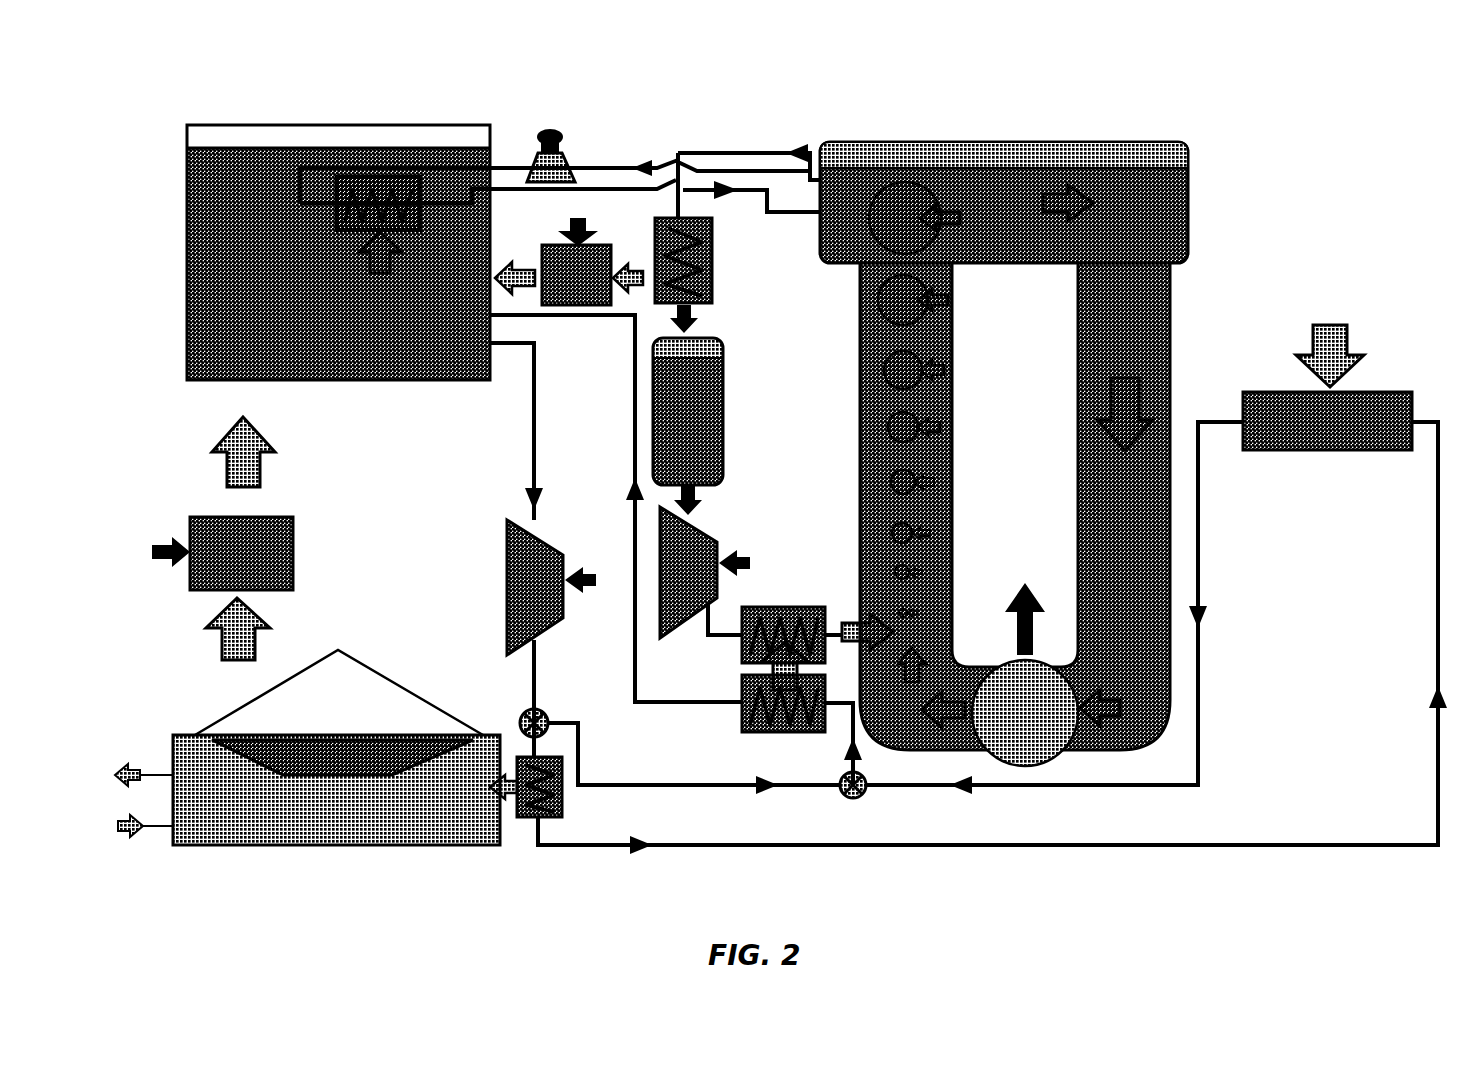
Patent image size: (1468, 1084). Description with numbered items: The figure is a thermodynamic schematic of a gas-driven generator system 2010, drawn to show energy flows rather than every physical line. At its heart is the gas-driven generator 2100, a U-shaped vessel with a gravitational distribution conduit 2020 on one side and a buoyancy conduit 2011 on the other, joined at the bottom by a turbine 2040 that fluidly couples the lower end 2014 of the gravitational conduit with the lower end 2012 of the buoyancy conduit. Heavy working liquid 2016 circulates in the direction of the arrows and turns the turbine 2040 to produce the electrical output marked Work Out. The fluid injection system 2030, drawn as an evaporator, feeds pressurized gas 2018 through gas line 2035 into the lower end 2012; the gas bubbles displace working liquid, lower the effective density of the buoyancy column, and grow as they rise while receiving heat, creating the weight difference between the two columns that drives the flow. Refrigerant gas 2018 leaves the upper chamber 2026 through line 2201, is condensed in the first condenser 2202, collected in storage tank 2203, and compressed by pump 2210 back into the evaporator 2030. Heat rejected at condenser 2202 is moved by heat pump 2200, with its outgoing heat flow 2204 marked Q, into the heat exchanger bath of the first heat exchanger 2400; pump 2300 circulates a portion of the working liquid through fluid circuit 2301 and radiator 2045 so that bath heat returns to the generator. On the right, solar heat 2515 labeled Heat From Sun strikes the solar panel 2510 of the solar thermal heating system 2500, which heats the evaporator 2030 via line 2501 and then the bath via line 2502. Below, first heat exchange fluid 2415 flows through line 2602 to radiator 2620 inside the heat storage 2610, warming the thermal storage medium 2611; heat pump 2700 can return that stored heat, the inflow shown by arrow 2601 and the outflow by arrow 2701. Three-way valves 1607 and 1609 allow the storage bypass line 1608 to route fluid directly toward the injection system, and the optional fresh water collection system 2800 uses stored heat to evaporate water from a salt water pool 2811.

The gas-driven generator system 2010 is at (500, 82).
The first heat exchanger 2400 is at (187, 237).
The radiator 2045 is at (333, 210).
The first heat exchange fluid 2415 is at (337, 348).
The pump 2300 is at (560, 162).
The fluid circuit 2301 is at (640, 152).
The heat output 2204 is at (520, 240).
The heat pump 2200 is at (585, 305).
The line 2201 is at (760, 140).
The first condenser 2202 is at (718, 290).
The storage tank 2203 is at (730, 420).
The pump 2210 is at (706, 535).
The gas-driven generator 2100 is at (985, 175).
The upper chamber 2026 is at (1030, 153).
The working liquid 2016 is at (1135, 330).
The pressurized gas 2018 is at (895, 307).
The gravitational distribution conduit 2020 is at (1088, 402).
The buoyancy conduit 2011 is at (943, 400).
The gas line 2035 is at (860, 615).
The turbine 2040 is at (1010, 672).
The lower end of buoyancy conduit 2012 is at (937, 740).
The lower end of gravitational distribution conduit 2014 is at (1118, 738).
The heat from sun 2515 is at (1323, 272).
The solar panel 2510 is at (1278, 393).
The solar thermal heating system 2500 is at (1274, 498).
The line 2501 is at (1208, 712).
The line 2502 is at (628, 410).
The line 2602 is at (520, 458).
The arrow 2701 is at (222, 445).
The heat pump 2700 is at (297, 550).
The arrow 2601 is at (215, 624).
The fresh water collection system 2800 is at (382, 670).
The salt water pool 2811 is at (330, 745).
The heat storage 2610 is at (196, 757).
The thermal storage medium 2611 is at (302, 835).
The radiator 2620 is at (565, 798).
The three way valve 1607 is at (550, 710).
The storage bypass line 1608 is at (673, 793).
The three way valve 1609 is at (848, 778).
The fluid injection system 2030 is at (728, 667).